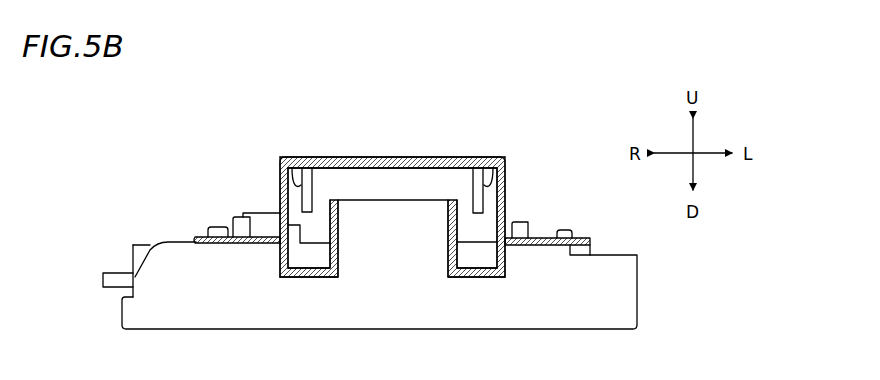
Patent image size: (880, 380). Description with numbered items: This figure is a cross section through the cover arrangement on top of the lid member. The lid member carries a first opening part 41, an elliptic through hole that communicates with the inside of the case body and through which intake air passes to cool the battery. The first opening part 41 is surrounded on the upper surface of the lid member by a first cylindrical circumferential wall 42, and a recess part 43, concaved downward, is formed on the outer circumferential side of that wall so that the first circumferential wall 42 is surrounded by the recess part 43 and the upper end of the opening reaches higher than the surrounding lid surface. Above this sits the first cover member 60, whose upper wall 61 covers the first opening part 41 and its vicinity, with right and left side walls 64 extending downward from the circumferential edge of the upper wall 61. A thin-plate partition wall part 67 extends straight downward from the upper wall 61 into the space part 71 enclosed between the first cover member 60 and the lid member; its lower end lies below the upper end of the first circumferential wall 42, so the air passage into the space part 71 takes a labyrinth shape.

The first opening part 41 is at (393, 236).
The first cylindrical circumferential wall 42 is at (458, 223).
The recess part 43 is at (305, 263).
The first cover member 60 is at (398, 221).
The upper wall 61 is at (352, 158).
The side wall 64 is at (276, 180).
The partition wall part 67 is at (295, 168).
The space part 71 is at (320, 200).